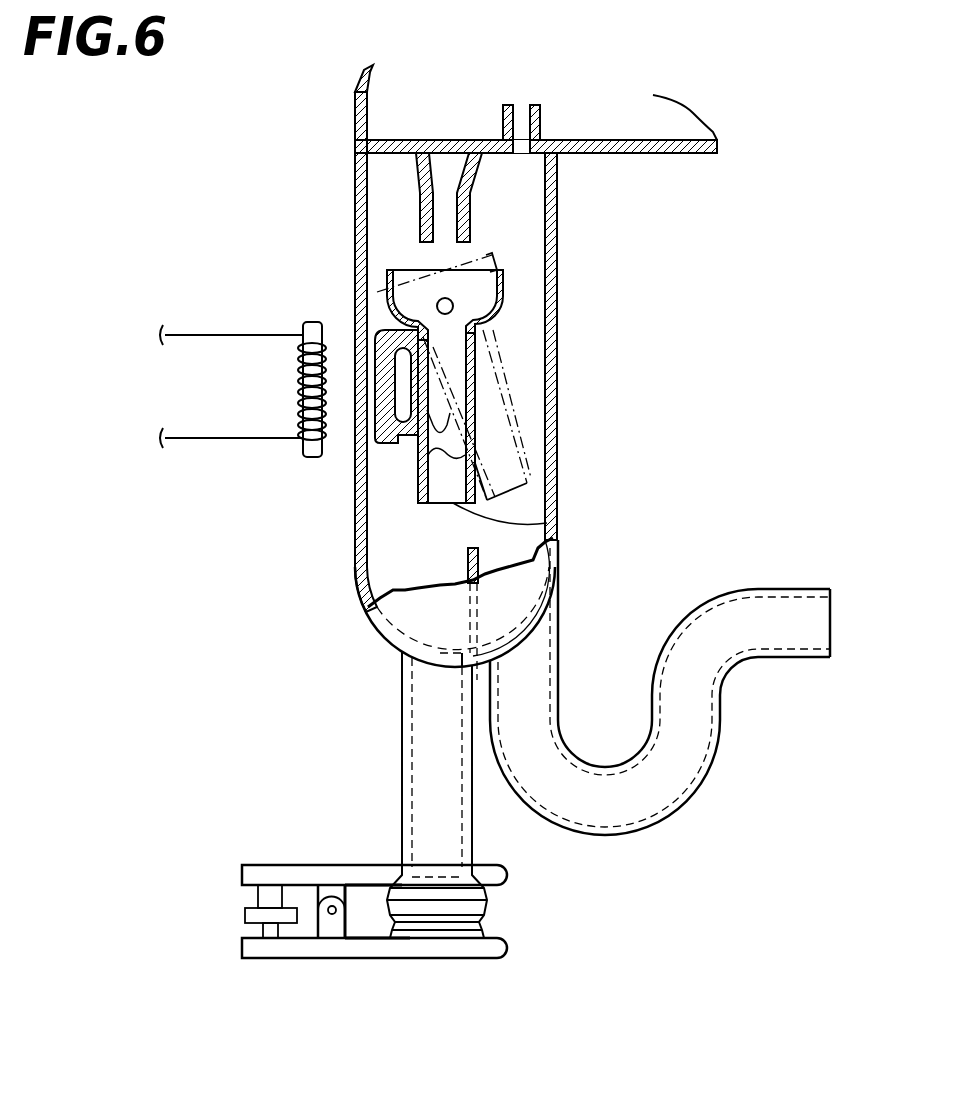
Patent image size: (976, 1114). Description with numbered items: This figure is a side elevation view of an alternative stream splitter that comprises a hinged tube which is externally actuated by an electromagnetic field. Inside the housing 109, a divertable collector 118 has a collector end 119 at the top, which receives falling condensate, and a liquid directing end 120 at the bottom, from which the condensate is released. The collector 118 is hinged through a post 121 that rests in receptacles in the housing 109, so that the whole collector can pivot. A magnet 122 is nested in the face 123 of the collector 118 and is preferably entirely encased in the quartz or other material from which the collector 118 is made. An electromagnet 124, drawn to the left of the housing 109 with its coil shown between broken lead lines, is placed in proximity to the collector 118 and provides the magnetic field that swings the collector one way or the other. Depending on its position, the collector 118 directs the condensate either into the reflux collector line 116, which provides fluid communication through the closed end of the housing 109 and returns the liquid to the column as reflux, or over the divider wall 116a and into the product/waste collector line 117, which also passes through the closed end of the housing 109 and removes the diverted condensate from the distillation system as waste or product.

The housing 109 is at (553, 392).
The reflux collector line 116 is at (535, 648).
The divider wall 116a is at (468, 550).
The product/waste collector line 117 is at (423, 700).
The divertable collector 118 is at (383, 272).
The collector end 119 is at (410, 268).
The liquid directing end 120 is at (520, 497).
The post 121 is at (453, 306).
The magnet 122 is at (420, 370).
The face 123 is at (398, 410).
The electromagnet 124 is at (287, 320).